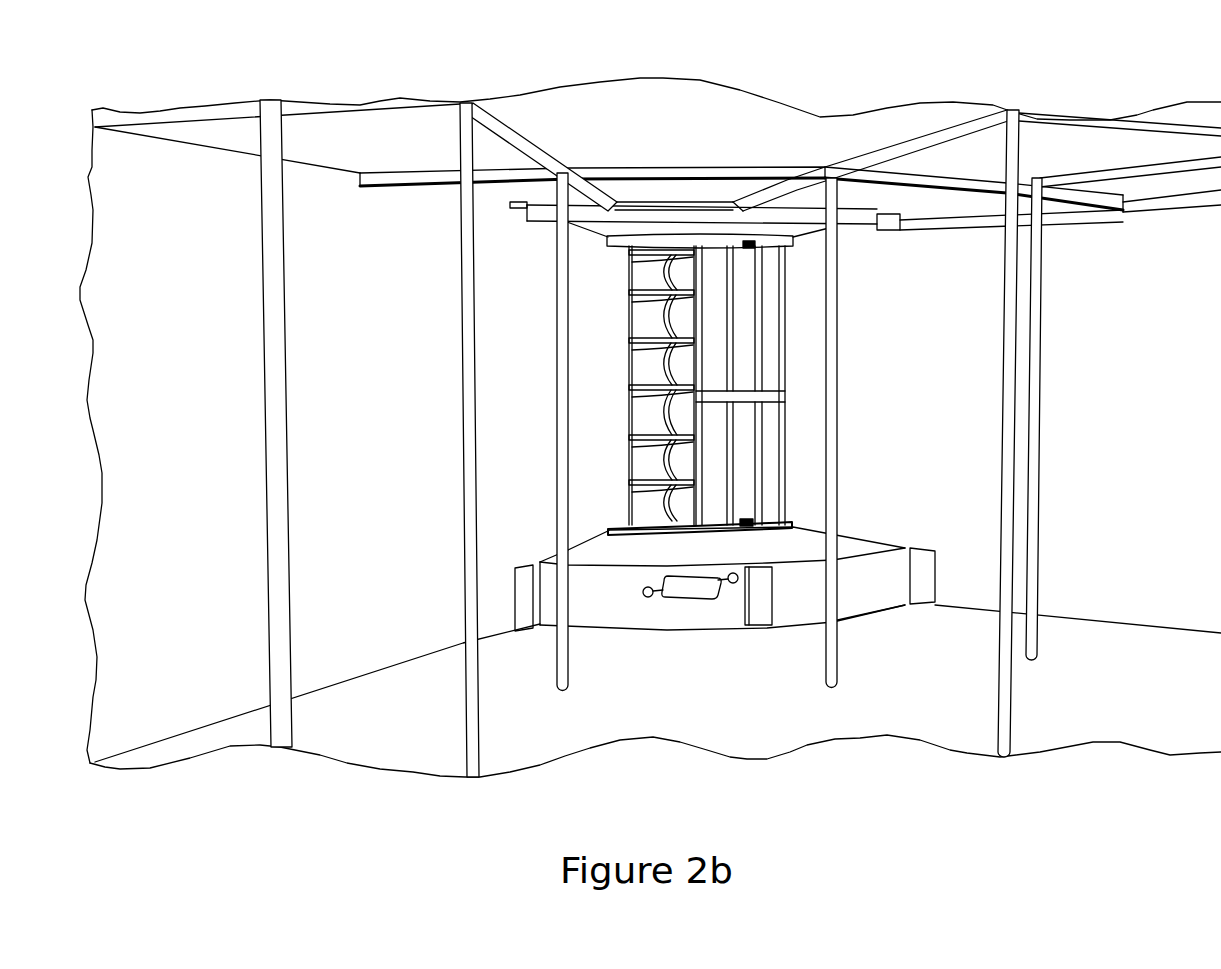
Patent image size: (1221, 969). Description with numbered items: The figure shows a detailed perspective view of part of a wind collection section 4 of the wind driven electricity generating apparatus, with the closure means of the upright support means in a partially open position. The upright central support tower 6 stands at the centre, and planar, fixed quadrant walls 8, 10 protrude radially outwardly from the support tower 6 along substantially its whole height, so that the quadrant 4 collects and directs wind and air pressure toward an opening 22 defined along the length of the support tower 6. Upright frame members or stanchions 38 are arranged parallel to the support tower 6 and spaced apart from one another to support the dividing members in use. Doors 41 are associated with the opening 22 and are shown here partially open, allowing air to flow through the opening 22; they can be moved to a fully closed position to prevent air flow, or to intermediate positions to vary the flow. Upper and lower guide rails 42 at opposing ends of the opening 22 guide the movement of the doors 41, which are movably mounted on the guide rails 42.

The wind collection section 4 is at (932, 287).
The support tower 6 is at (722, 310).
The quadrant wall 8 is at (385, 498).
The quadrant wall 10 is at (1162, 422).
The opening 22 is at (652, 277).
The upright frame member 38 is at (467, 132).
The door 41 is at (748, 373).
The guide rail 42 is at (638, 233).